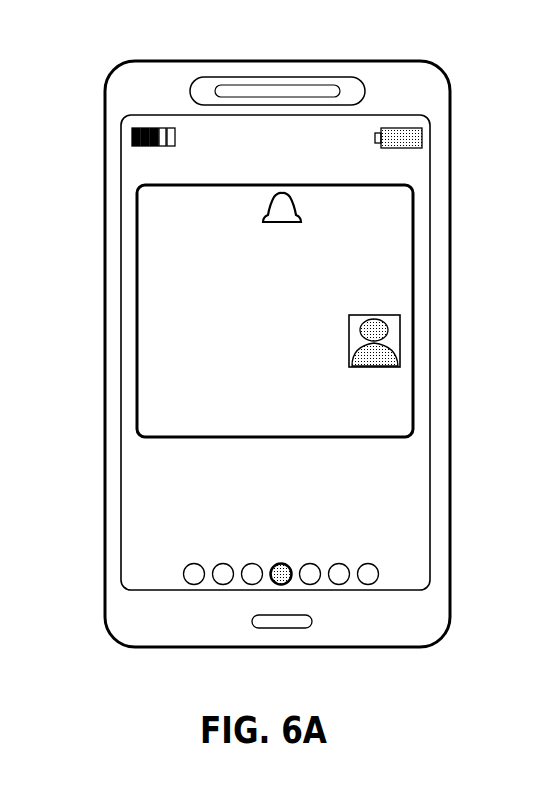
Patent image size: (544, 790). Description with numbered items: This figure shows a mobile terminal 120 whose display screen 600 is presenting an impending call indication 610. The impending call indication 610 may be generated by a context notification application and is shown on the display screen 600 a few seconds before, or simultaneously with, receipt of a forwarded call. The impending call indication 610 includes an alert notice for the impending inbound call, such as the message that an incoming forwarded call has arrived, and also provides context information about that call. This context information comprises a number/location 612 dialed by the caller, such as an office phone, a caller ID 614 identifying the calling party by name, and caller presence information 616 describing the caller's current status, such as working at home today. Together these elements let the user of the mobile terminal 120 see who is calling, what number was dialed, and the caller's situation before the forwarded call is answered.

The mobile terminal 120 is at (150, 55).
The display screen 600 is at (407, 115).
The impending call indication 610 is at (137, 249).
The number/location dialed by the caller 612 is at (334, 292).
The caller ID 614 is at (134, 335).
The caller presence information 616 is at (380, 404).